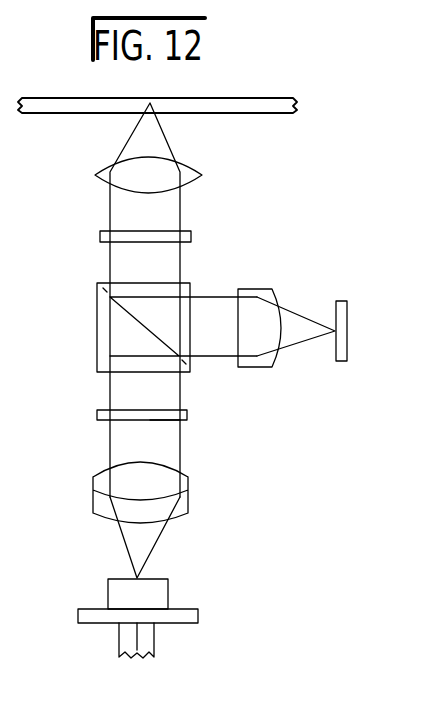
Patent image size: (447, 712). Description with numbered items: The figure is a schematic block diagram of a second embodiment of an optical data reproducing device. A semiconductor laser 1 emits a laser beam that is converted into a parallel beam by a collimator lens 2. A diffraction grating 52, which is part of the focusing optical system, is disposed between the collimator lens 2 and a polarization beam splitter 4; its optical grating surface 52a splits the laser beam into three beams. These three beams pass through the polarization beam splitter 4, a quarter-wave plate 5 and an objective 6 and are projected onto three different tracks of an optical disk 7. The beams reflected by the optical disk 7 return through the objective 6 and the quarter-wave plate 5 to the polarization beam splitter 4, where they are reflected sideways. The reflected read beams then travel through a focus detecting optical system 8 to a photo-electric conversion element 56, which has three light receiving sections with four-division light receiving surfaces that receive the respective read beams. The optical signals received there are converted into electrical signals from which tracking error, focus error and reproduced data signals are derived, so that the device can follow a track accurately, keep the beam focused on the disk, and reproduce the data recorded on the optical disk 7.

The semiconductor laser 1 is at (168, 597).
The collimator lens 2 is at (188, 497).
The polarization beam splitter 4 is at (97, 333).
The quarter-wave plate 5 is at (191, 236).
The objective 6 is at (203, 176).
The optical disk 7 is at (255, 113).
The focus detecting optical system 8 is at (265, 289).
The diffraction grating 52 is at (187, 416).
The optical grating surface 52a is at (163, 421).
The photo-electric conversion element 56 is at (347, 306).